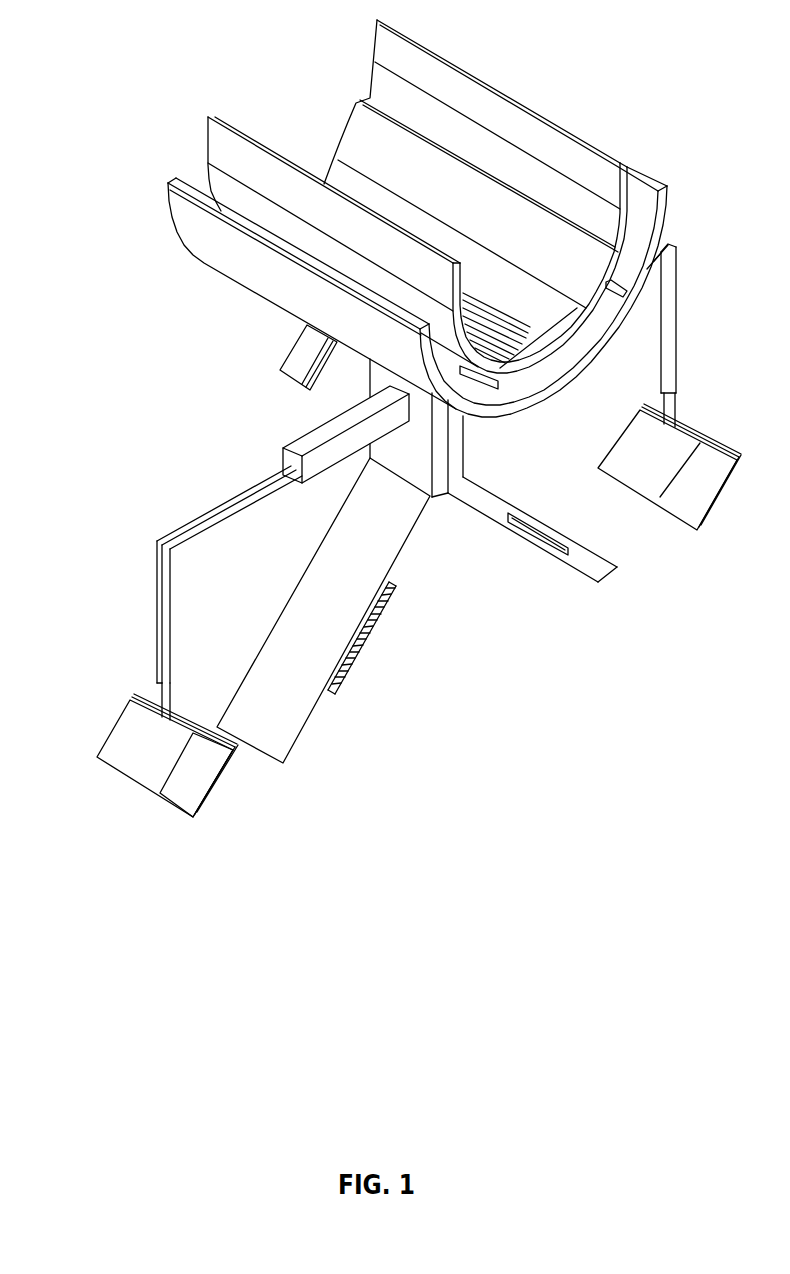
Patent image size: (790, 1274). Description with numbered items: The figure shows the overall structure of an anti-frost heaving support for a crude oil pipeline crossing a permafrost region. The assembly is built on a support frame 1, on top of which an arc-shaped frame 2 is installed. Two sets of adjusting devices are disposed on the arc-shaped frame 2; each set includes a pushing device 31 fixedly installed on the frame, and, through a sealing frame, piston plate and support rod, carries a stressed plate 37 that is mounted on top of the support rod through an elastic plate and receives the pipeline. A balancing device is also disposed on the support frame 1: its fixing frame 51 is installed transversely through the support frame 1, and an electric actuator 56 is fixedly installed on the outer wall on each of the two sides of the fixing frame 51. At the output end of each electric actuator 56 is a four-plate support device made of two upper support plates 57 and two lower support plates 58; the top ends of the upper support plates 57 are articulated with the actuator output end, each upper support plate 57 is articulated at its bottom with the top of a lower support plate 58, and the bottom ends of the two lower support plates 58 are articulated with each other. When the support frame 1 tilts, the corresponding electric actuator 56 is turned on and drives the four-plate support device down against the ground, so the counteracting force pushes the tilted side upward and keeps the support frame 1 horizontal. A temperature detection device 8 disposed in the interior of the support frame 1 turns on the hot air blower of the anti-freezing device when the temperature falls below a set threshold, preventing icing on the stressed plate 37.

The support frame 1 is at (378, 520).
The arc-shaped frame 2 is at (235, 248).
The temperature detection device 8 is at (370, 612).
The pushing device 31 is at (298, 358).
The stressed plate 37 is at (258, 172).
The fixing frame 51 is at (290, 440).
The electric actuator 56 is at (185, 523).
The upper support plate 57 is at (140, 753).
The lower support plate 58 is at (177, 807).